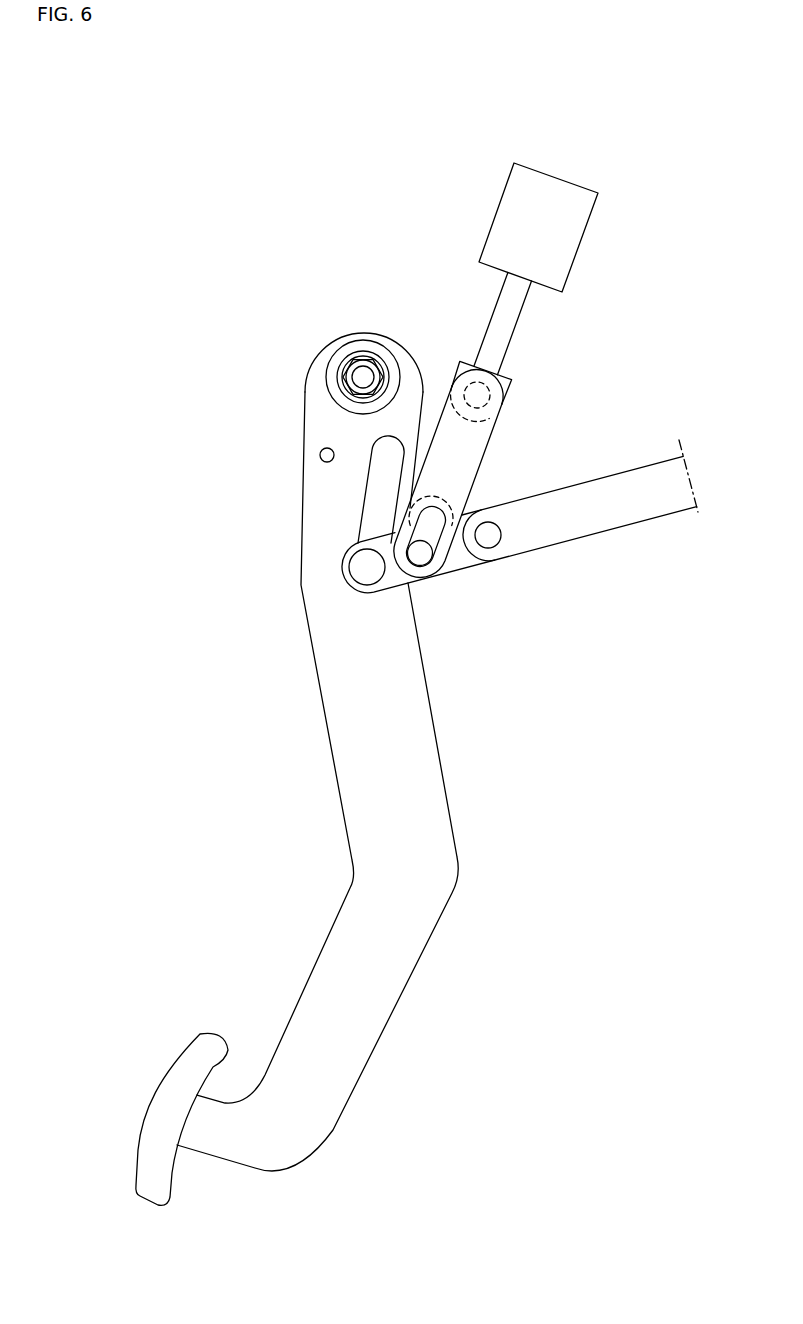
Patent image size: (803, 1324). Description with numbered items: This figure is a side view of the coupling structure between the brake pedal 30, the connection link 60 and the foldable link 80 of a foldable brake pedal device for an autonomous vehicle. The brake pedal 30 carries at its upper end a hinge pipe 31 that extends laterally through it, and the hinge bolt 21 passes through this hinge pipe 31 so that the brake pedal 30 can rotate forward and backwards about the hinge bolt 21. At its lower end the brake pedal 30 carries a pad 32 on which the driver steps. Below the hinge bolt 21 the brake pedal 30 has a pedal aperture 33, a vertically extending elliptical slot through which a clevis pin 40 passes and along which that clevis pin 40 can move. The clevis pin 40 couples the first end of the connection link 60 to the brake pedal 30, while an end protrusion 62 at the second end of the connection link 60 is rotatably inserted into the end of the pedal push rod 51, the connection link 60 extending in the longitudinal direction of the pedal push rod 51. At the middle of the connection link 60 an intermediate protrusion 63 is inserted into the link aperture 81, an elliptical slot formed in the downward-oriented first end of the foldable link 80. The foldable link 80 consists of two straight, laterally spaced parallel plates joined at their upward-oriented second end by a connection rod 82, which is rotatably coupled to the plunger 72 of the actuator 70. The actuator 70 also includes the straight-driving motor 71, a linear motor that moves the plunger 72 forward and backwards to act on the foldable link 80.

The hinge bolt 21 is at (365, 377).
The brake pedal 30 is at (345, 688).
The hinge pipe 31 is at (347, 355).
The pad 32 is at (170, 1102).
The pedal aperture 33 is at (383, 485).
The clevis pin 40 is at (367, 567).
The pedal push rod 51 is at (625, 513).
The connection link 60 is at (458, 562).
The end protrusion 62 is at (490, 537).
The intermediate protrusion 63 is at (421, 555).
The actuator 70 is at (529, 227).
The straight-driving motor 71 is at (512, 212).
The plunger 72 is at (507, 327).
The foldable link 80 is at (470, 455).
The link aperture 81 is at (440, 518).
The connection rod 82 is at (488, 397).